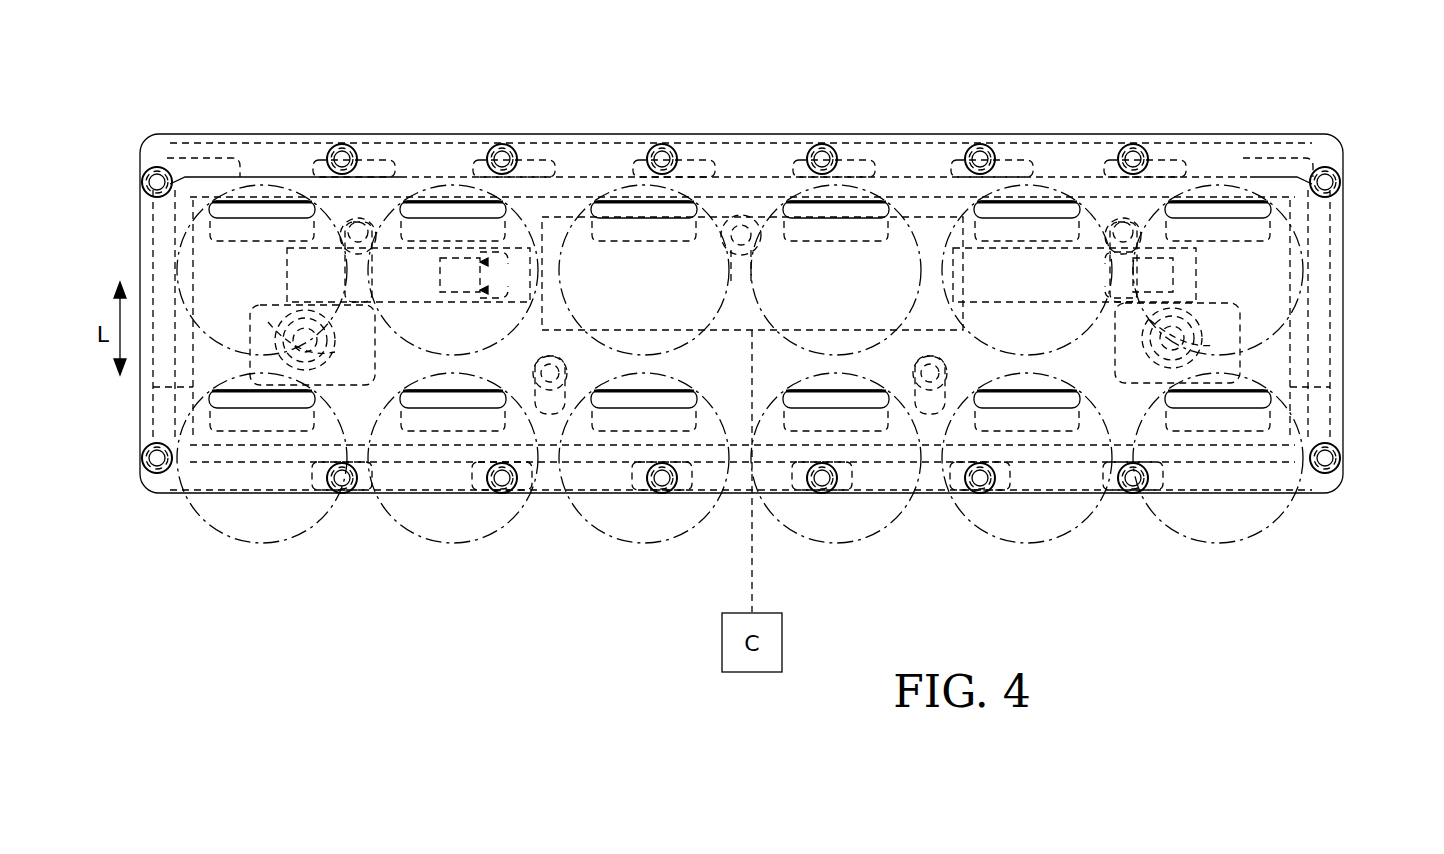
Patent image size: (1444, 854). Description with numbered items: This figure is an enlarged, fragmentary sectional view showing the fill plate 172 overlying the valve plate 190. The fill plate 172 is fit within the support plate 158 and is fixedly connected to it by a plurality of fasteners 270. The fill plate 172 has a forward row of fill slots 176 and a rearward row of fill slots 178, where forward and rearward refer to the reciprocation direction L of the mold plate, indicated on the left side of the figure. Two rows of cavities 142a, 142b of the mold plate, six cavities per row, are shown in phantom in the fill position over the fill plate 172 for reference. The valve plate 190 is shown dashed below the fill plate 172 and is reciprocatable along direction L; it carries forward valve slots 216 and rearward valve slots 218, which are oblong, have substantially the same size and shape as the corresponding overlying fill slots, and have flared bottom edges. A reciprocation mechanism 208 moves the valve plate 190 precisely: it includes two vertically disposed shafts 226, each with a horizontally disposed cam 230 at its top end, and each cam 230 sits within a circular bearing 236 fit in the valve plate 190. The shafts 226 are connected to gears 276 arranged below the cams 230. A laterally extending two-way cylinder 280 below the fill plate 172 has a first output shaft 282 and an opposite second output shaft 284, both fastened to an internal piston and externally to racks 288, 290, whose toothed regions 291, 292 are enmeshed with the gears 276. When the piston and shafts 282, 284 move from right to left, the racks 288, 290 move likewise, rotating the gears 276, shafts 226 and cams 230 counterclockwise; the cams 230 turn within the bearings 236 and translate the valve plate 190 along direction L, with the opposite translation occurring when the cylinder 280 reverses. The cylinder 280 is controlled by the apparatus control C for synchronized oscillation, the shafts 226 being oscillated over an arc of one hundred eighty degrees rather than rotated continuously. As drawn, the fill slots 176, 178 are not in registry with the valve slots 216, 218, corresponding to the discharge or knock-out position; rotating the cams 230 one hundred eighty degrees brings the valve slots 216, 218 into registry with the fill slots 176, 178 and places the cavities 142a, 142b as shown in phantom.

The cavities 142a is at (1270, 514).
The cavities 142b is at (1274, 321).
The support plate 158 is at (155, 160).
The fill plate 172 is at (1344, 218).
The fill slots 176 is at (683, 404).
The fill slots 178 is at (690, 206).
The valve plate 190 is at (193, 387).
The reciprocation mechanism 208 is at (487, 328).
The forward valve slots 216 is at (613, 418).
The rearward valve slots 218 is at (610, 228).
The shaft 226 is at (303, 362).
The cam 230 is at (347, 475).
The circular bearing 236 is at (340, 352).
The fasteners 270 is at (336, 147).
The gears 276 is at (290, 318).
The two-way cylinder 280 is at (580, 217).
The first output shaft 282 is at (470, 292).
The second output shaft 284 is at (1148, 252).
The rack 288 is at (400, 248).
The rack 290 is at (1205, 245).
The toothed region 291 is at (300, 270).
The toothed region 292 is at (1312, 313).